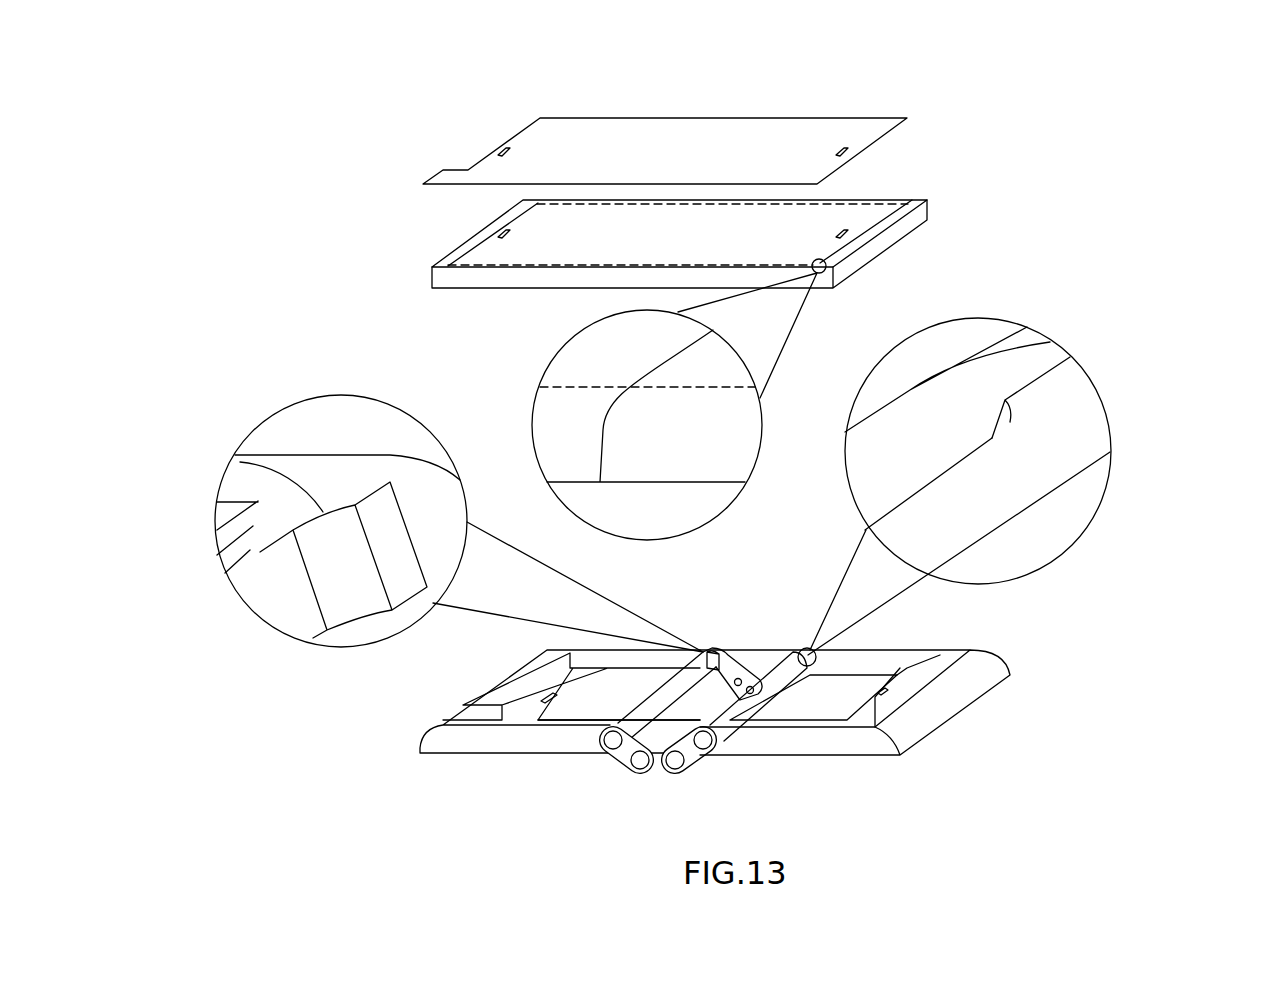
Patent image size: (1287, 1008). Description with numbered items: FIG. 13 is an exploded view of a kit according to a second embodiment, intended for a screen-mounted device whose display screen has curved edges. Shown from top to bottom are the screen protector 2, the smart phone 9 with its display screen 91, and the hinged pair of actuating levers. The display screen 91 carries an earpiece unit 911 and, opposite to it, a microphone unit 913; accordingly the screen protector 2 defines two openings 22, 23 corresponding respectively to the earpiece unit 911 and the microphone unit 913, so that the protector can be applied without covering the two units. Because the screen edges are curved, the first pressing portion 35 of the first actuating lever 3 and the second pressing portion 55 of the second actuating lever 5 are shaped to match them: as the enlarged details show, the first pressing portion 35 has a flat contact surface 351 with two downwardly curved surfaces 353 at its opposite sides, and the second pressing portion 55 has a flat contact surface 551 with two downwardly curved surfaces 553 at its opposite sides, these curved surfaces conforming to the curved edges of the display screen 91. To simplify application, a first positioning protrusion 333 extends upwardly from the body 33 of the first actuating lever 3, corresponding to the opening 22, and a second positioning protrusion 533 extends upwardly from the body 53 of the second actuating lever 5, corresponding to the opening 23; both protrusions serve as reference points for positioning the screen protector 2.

The screen protector 2 is at (867, 150).
The opening 22 is at (838, 150).
The opening 23 is at (500, 150).
The smart phone 9 is at (432, 270).
The earpiece unit 911 is at (848, 233).
The microphone unit 913 is at (497, 235).
The display screen 91 is at (670, 358).
The first pressing portion 35 is at (930, 542).
The flat contact surface 351 is at (935, 483).
The downwardly curved surface 353 is at (1010, 422).
The second pressing portion 55 is at (222, 549).
The downwardly curved surface 553 is at (240, 462).
The flat contact surface 551 is at (260, 552).
The second actuating lever 5 is at (400, 748).
The second positioning protrusion 533 is at (540, 703).
The body 53 is at (562, 703).
The first actuating lever 3 is at (1018, 722).
The body 33 is at (847, 708).
The first positioning protrusion 333 is at (880, 727).